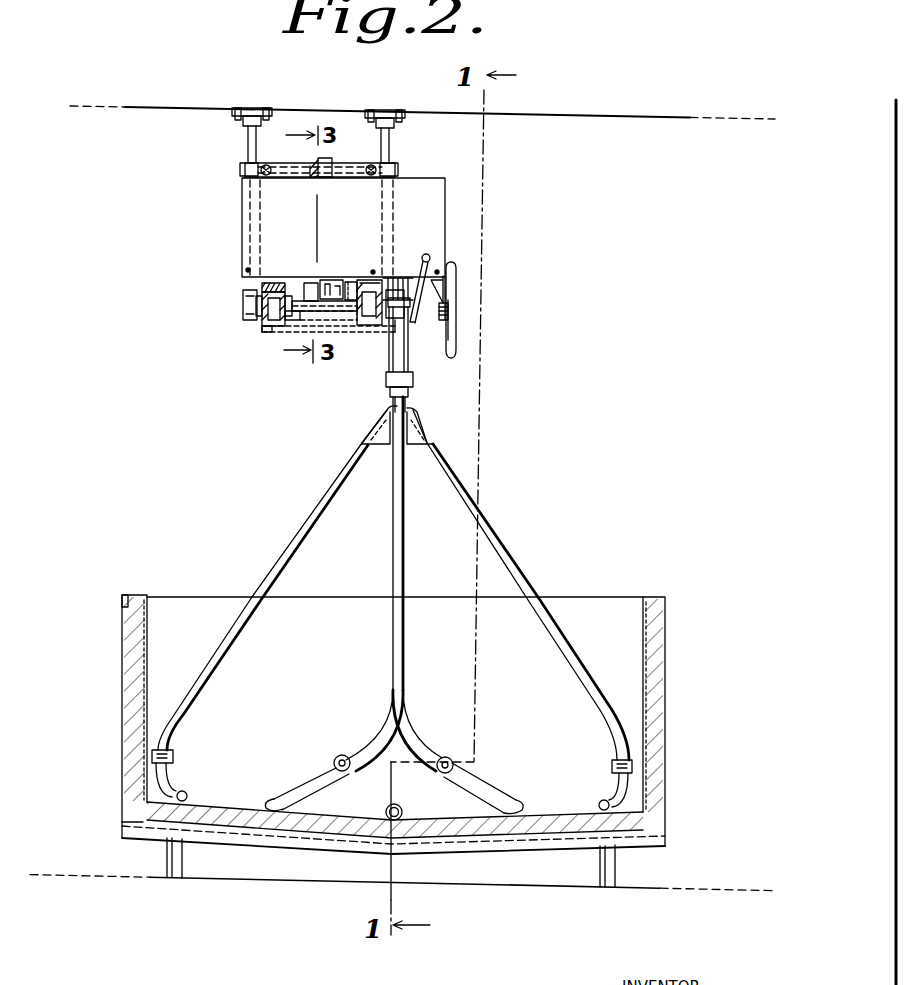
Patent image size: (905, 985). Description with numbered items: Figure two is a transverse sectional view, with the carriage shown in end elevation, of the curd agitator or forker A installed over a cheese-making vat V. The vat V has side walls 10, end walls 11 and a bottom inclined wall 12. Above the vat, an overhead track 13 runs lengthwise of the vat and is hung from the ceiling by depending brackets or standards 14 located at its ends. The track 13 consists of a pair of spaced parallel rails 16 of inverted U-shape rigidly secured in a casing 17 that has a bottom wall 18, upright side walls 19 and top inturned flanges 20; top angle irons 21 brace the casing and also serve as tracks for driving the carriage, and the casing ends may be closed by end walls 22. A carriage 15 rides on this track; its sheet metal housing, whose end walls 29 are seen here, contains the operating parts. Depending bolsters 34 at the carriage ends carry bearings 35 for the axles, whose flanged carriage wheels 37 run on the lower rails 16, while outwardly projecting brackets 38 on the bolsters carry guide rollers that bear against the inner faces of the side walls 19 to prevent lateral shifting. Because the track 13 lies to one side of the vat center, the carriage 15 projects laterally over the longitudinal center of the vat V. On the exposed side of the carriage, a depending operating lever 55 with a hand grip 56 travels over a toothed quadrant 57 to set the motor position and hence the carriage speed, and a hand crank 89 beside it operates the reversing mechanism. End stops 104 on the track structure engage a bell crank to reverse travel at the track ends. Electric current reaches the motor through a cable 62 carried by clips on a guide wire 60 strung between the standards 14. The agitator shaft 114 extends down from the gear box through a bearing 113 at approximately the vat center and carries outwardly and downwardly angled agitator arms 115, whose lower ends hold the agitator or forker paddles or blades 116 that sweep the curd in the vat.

The side walls 10 is at (203, 604).
The end walls 11 is at (131, 615).
The bottom inclined wall 12 is at (238, 806).
The overhead track 13 is at (266, 331).
The depending brackets or standards 14 is at (253, 150).
The carriage 15 is at (438, 220).
The rails 16 is at (262, 320).
The casing 17 is at (244, 299).
The bottom wall 18 is at (286, 323).
The side walls 19 is at (258, 311).
The top inturned flanges 20 is at (268, 289).
The angle irons 21 is at (290, 296).
The end walls 22 is at (340, 331).
The end walls 29 is at (414, 191).
The bolsters 34 is at (314, 285).
The bearings 35 is at (299, 326).
The flanged carriage wheels 37 is at (287, 298).
The outwardly projecting brackets 38 is at (343, 283).
The operating lever 55 is at (455, 324).
The hand grip 56 is at (454, 345).
The quadrant 57 is at (444, 291).
The guide wire 60 is at (332, 168).
The cable 62 is at (315, 166).
The hand crank 89 is at (448, 309).
The end stops 104 is at (362, 282).
The bearing 113 is at (389, 368).
The agitator shaft 114 is at (407, 399).
The agitator arms 115 is at (302, 551).
The agitator paddles or blades 116 is at (176, 773).
The curd agitator or forker A is at (229, 244).
The vat V is at (615, 610).